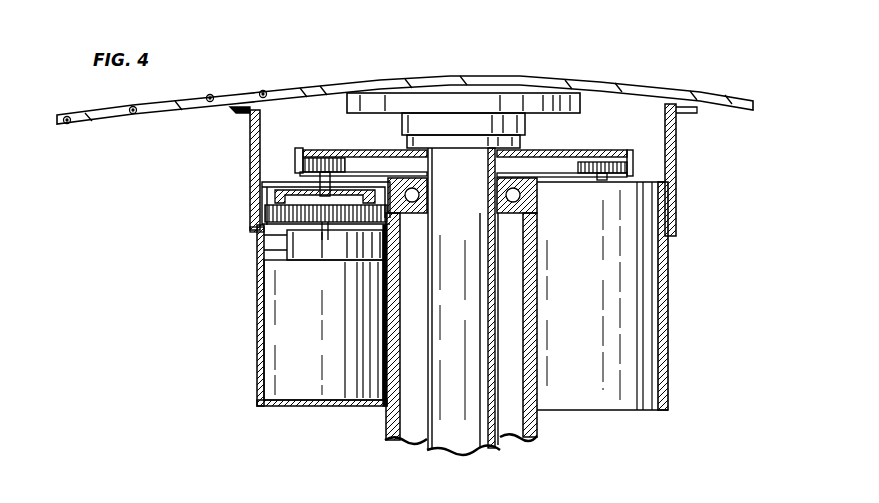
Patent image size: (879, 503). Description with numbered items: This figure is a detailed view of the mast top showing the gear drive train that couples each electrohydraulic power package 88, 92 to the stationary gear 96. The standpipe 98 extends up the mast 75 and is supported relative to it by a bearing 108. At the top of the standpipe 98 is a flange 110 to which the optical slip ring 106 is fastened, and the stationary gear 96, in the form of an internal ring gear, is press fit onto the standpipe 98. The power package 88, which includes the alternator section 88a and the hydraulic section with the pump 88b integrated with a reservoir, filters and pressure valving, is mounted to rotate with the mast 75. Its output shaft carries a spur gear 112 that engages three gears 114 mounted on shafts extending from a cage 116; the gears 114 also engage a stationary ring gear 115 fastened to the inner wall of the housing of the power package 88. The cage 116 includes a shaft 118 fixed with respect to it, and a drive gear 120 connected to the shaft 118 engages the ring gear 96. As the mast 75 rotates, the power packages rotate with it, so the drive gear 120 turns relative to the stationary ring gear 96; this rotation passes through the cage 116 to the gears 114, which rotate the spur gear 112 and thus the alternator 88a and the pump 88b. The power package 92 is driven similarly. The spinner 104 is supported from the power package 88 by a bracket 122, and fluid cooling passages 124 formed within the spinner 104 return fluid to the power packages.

The mast 75 is at (388, 432).
The electrohydraulic power package 88 is at (226, 312).
The alternator section 88a is at (290, 246).
The pump 88b is at (268, 360).
The electrohydraulic power package 92 is at (670, 278).
The stationary gear 96 is at (607, 148).
The standpipe 98 is at (487, 372).
The spinner 104 is at (478, 80).
The optical slip ring 106 is at (550, 100).
The bearing 108 is at (517, 194).
The flange 110 is at (530, 143).
The spur gear 112 is at (325, 223).
The gears 114 is at (378, 224).
The stationary ring gear 115 is at (288, 238).
The cage 116 is at (285, 200).
The shaft 118 is at (345, 182).
The drive gear 120 is at (312, 160).
The bracket 122 is at (250, 127).
The fluid cooling passages 124 is at (133, 114).